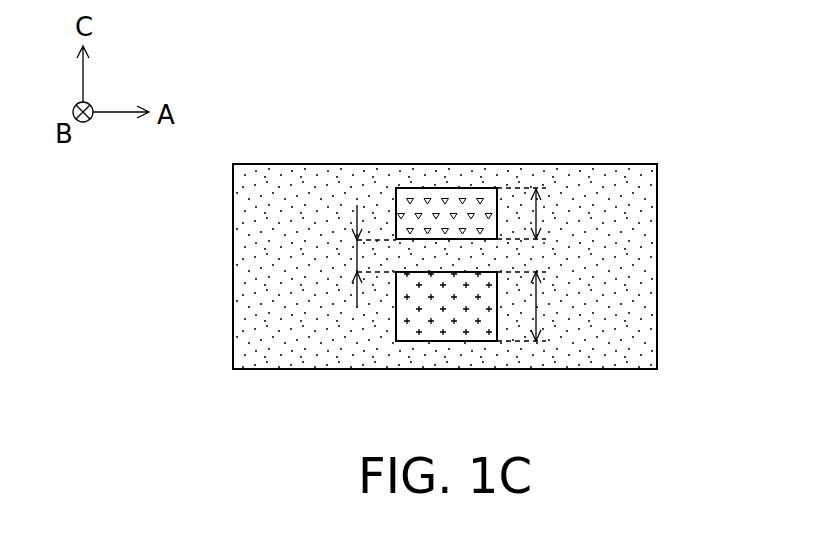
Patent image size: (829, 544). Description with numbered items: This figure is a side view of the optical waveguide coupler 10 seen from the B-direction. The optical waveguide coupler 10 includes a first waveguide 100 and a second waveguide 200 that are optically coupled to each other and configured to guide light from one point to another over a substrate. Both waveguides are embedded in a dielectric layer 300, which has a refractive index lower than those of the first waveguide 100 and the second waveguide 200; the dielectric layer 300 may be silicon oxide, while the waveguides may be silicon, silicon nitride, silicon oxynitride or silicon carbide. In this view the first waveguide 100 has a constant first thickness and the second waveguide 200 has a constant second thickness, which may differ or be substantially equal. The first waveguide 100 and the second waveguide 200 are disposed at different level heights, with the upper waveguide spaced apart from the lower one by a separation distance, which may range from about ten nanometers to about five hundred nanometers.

The optical waveguide coupler 10 is at (618, 134).
The first waveguide 100 is at (438, 198).
The second waveguide 200 is at (439, 336).
The dielectric layer 300 is at (657, 265).